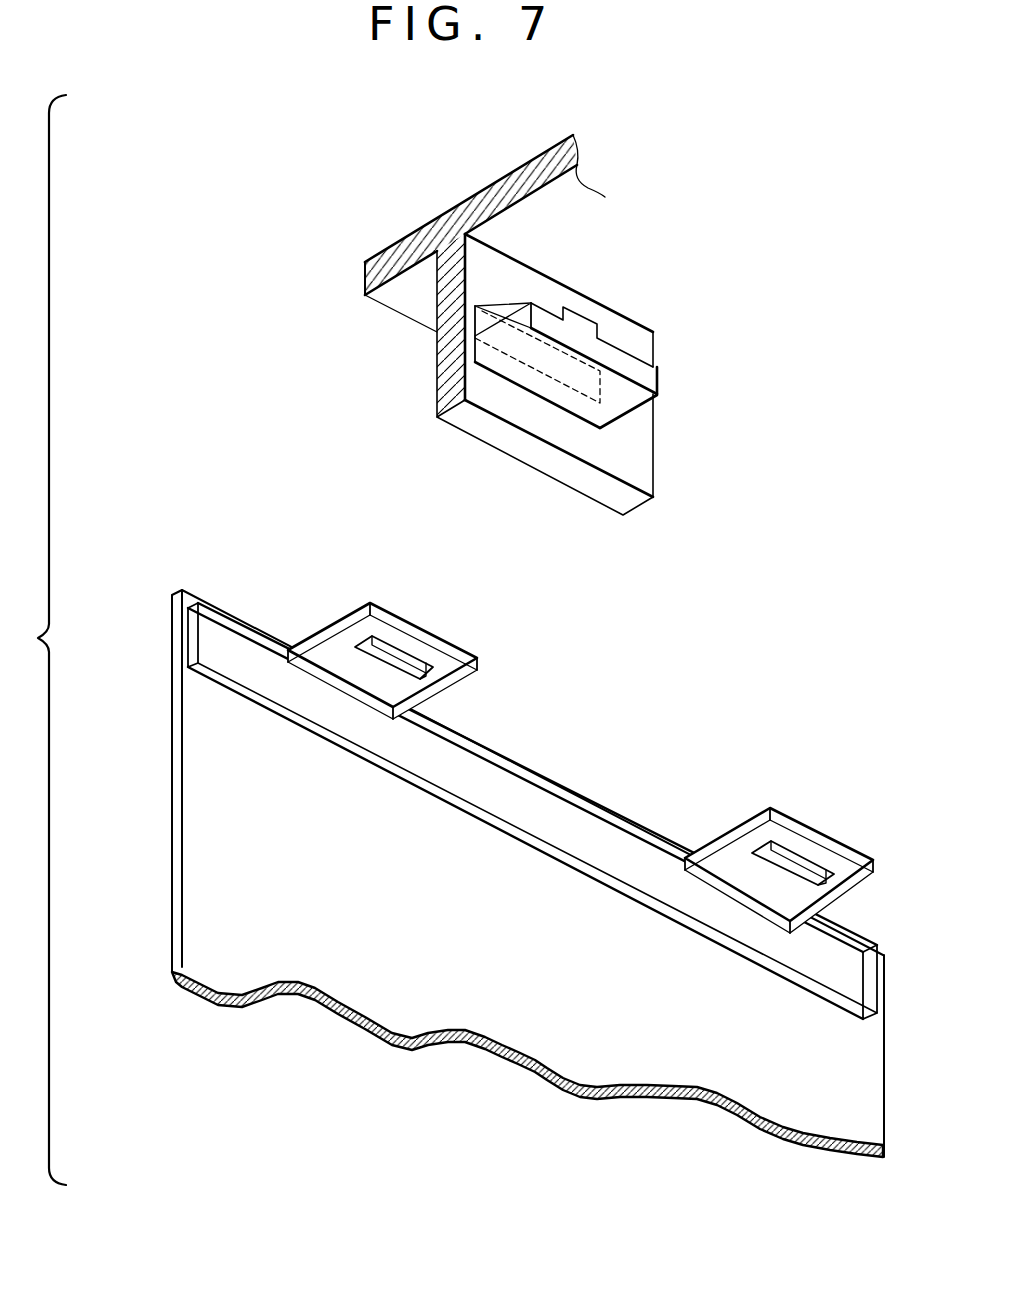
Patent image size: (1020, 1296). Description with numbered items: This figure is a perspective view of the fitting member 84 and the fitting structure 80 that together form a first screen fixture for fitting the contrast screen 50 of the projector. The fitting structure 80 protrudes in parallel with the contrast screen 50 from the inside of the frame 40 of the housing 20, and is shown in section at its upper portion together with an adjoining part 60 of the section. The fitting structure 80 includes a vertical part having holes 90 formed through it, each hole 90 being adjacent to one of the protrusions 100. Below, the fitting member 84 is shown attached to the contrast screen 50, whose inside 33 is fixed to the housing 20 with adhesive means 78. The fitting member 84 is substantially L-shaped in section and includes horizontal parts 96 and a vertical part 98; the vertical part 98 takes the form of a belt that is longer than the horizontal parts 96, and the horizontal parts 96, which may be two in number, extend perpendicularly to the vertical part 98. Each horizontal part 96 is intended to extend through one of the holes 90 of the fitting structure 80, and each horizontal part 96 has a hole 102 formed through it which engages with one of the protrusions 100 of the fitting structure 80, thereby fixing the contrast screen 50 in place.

The housing 20 is at (372, 233).
The frame 40 is at (414, 245).
The web section 60 is at (365, 278).
The fitting structure 80 is at (494, 267).
The hole 90 is at (487, 320).
The protrusion 100 is at (583, 323).
The inside of the screen 33 is at (540, 962).
The contrast screen 50 is at (255, 965).
The adhesive means 78 is at (181, 644).
The vertical part 98 is at (276, 687).
The fitting member 84 is at (503, 670).
The horizontal part 96 is at (428, 638).
The hole 102 is at (432, 676).